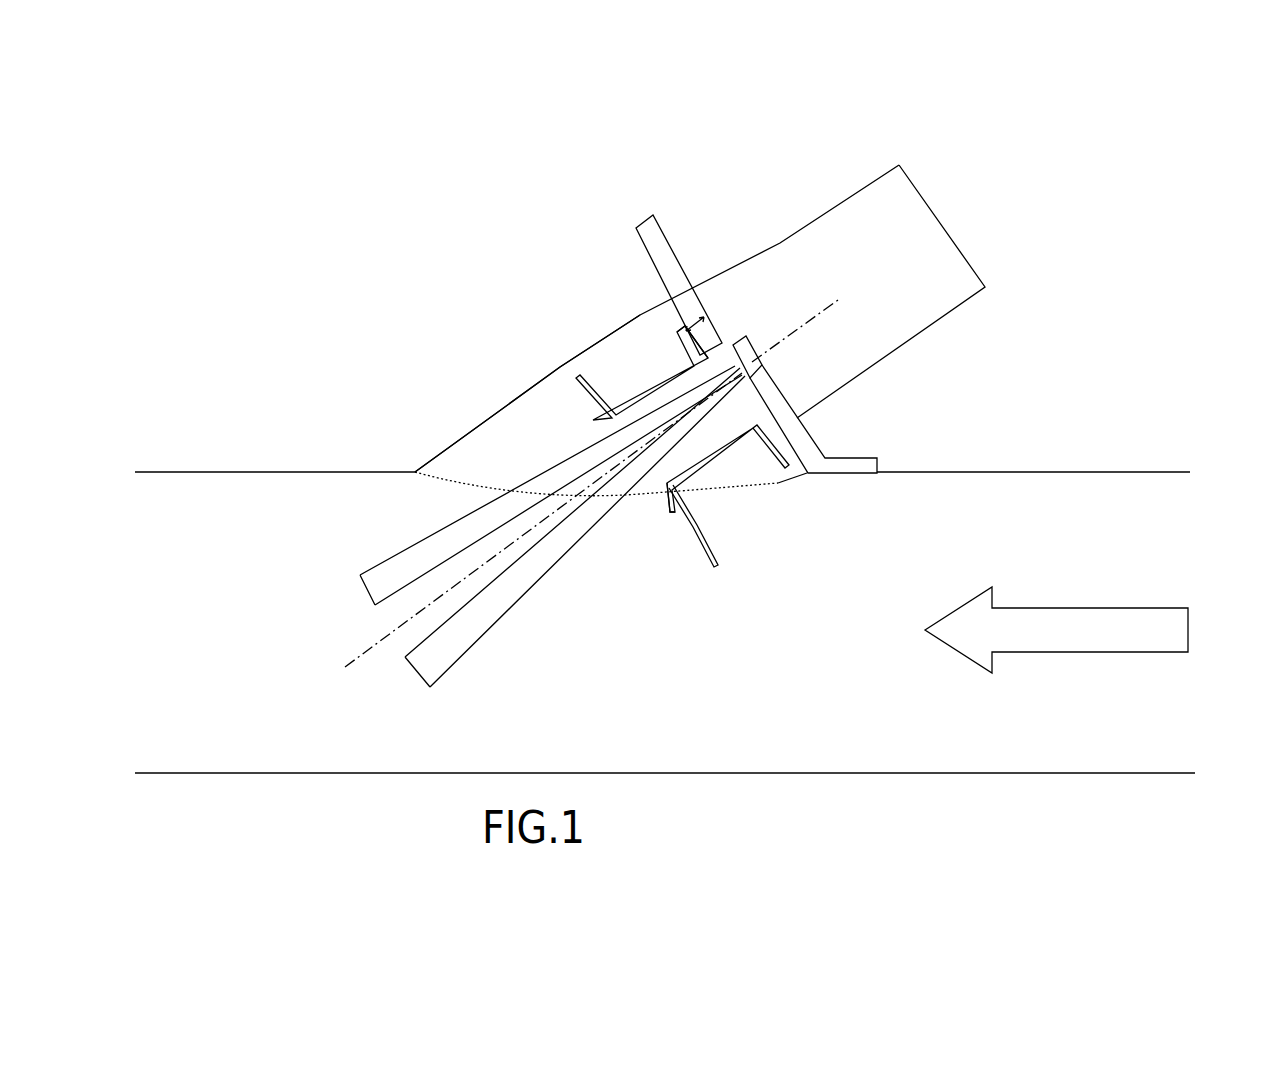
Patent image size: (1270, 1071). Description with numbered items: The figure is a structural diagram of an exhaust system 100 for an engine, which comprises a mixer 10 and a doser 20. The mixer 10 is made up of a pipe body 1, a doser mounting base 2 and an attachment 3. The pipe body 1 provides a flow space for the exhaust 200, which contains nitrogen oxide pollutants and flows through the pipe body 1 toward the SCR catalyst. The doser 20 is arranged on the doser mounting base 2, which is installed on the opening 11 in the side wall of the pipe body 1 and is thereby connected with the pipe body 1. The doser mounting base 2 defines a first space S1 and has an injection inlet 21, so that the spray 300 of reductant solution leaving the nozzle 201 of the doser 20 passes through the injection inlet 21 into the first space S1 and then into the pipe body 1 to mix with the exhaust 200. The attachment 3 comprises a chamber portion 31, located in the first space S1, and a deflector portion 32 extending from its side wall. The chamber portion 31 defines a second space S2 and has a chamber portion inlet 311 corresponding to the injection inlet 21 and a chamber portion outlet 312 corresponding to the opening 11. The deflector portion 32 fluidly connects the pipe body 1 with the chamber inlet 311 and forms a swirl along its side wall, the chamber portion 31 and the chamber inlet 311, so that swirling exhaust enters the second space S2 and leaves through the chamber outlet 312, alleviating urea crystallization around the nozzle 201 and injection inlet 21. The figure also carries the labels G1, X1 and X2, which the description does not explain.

The exhaust system 100 is at (670, 73).
The pipe body 1 is at (979, 472).
The opening 11 is at (773, 482).
The mixer 10 is at (440, 388).
The doser mounting base 2 is at (552, 376).
The first space S1 is at (533, 423).
The second space S2 is at (710, 437).
The doser 20 is at (908, 230).
The injection inlet 21 is at (727, 350).
The nozzle 201 is at (748, 368).
The attachment 3 is at (672, 422).
The chamber portion 31 is at (645, 393).
The chamber portion inlet 311 is at (708, 347).
The deflector portion 32 is at (711, 568).
The chamber portion outlet 312 is at (645, 500).
The gap G1 is at (688, 308).
The spray 300 is at (392, 578).
The first axis X1 is at (808, 306).
The second axis X2 is at (520, 545).
The exhaust 200 is at (1153, 632).